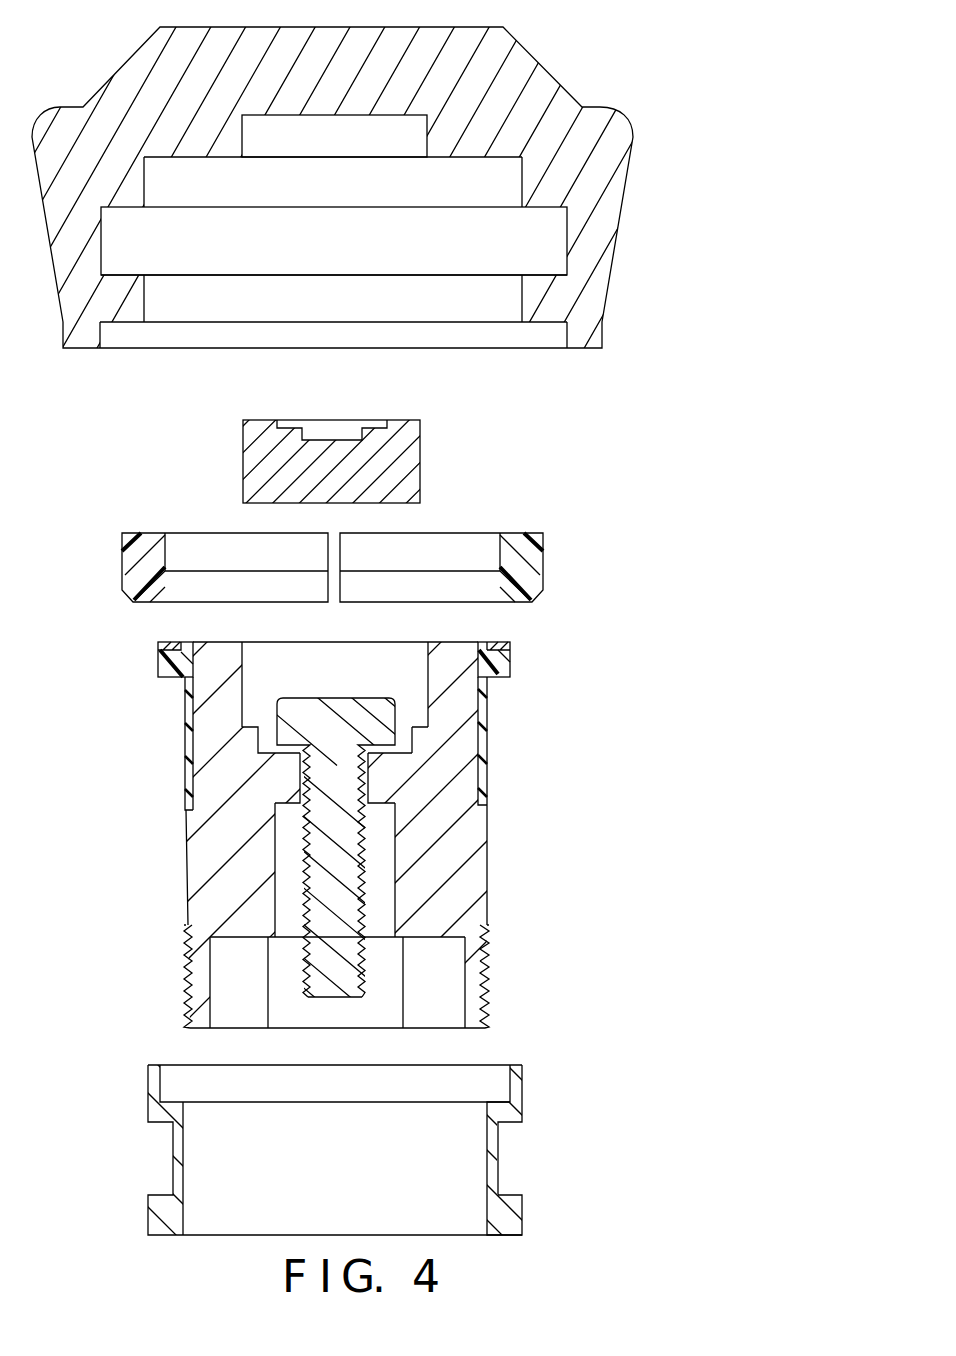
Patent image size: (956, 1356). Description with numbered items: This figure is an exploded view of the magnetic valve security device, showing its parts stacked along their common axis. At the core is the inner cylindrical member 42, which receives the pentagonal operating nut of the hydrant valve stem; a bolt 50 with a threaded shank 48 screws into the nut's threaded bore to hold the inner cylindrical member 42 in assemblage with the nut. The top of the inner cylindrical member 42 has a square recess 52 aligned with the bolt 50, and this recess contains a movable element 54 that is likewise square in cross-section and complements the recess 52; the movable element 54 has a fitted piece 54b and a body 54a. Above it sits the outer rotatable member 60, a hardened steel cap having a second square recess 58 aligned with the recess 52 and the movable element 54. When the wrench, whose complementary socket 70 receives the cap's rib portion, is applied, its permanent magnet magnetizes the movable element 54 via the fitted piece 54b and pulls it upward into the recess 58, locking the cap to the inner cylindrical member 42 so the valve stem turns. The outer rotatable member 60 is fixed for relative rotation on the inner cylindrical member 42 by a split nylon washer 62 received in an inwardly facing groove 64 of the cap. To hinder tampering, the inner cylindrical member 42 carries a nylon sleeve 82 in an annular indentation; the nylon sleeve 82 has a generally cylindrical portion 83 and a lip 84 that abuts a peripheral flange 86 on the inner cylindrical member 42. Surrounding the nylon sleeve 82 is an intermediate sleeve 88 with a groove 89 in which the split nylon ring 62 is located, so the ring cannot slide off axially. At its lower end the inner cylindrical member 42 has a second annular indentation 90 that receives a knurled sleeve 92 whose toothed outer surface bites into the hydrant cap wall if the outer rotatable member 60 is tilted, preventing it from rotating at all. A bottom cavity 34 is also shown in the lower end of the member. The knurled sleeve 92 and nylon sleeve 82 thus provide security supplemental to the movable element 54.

The bottom cavity 34 is at (452, 1003).
The inner cylindrical member 42 is at (394, 843).
The threaded shank 48 is at (323, 957).
The bolt 50 is at (332, 864).
The square recess 52 is at (343, 680).
The movable element 54 is at (328, 440).
The insert body 54a is at (405, 463).
The fitted piece 54b is at (345, 425).
The second square recess 58 is at (378, 149).
The outer rotatable member 60 is at (386, 188).
The split nylon washer 62 is at (532, 562).
The inwardly facing groove 64 is at (567, 241).
The complementary socket 70 is at (547, 68).
The nylon sleeve 82 is at (379, 714).
The generally cylindrical portion 83 is at (485, 702).
The lip 84 is at (498, 662).
The peripheral flange 86 is at (497, 643).
The intermediate sleeve 88 is at (378, 1150).
The groove 89 is at (500, 1170).
The second annular indentation 90 is at (485, 922).
The knurled sleeve 92 is at (487, 982).